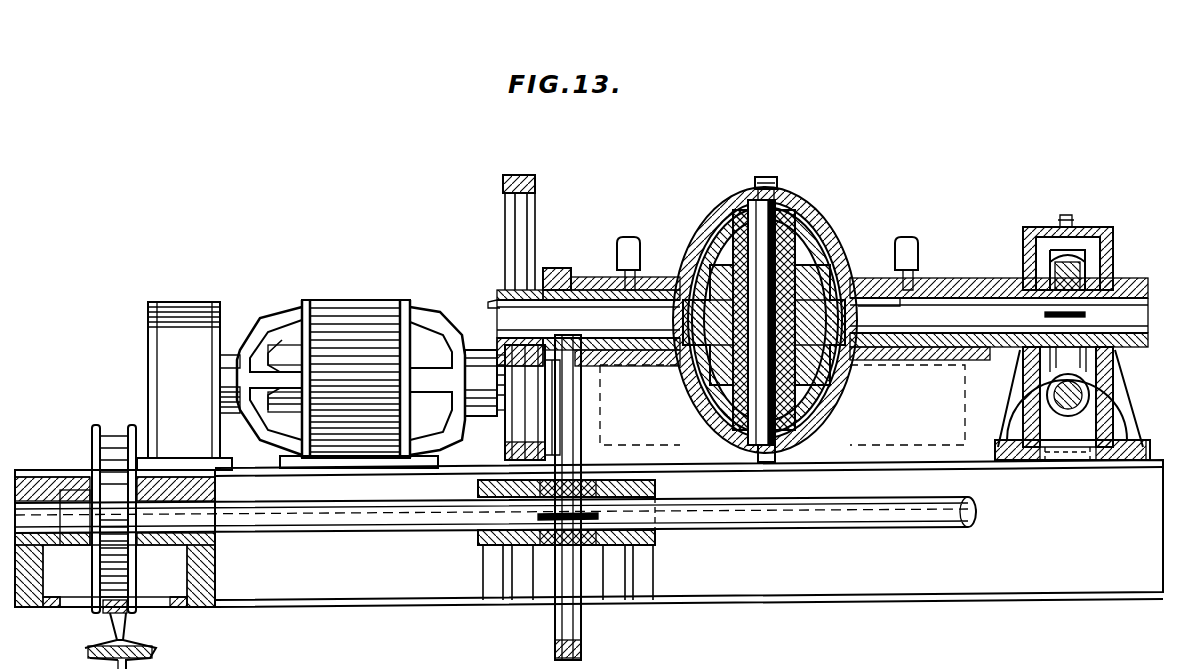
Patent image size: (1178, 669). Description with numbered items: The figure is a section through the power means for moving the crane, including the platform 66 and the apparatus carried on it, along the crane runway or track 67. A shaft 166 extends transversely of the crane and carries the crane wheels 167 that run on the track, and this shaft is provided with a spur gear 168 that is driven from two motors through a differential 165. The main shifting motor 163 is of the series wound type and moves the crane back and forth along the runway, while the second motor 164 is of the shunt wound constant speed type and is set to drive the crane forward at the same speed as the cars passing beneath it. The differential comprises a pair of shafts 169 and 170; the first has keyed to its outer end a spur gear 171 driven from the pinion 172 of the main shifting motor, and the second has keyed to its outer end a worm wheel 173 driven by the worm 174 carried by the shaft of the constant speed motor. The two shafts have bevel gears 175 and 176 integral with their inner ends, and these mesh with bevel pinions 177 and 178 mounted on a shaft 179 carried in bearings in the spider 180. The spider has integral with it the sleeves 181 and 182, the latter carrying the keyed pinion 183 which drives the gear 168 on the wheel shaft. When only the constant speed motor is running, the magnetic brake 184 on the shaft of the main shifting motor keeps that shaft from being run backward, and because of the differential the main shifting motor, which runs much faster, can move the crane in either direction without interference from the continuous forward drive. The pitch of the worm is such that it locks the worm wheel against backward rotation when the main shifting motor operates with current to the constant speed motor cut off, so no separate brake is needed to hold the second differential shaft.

The platform 66 is at (1096, 568).
The crane runway or track 67 is at (112, 622).
The main shifting motor 163 is at (342, 302).
The motor 164 is at (1124, 430).
The differential 165 is at (750, 184).
The shaft 166 is at (363, 524).
The crane wheels 167 is at (93, 440).
The spur gear 168 is at (556, 640).
The shaft 169 is at (642, 318).
The shaft 170 is at (986, 318).
The spur gear 171 is at (505, 188).
The pinion 172 is at (545, 402).
The worm wheel 173 is at (1045, 228).
The worm 174 is at (1060, 418).
The bevel gear 175 is at (862, 270).
The bevel gear 176 is at (718, 228).
The bevel pinion 177 is at (846, 228).
The bevel pinion 178 is at (782, 405).
The shaft 179 is at (782, 270).
The spider 180 is at (726, 215).
The sleeve 181 is at (935, 292).
The sleeve 182 is at (590, 286).
The pinion 183 is at (556, 268).
The magnetic brake 184 is at (160, 320).